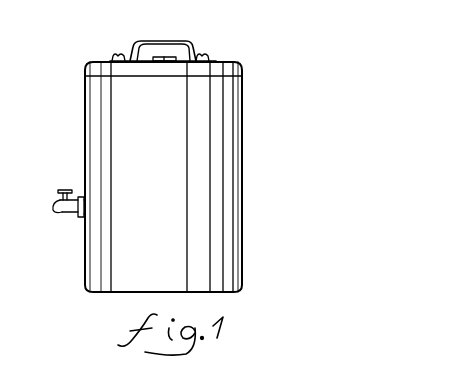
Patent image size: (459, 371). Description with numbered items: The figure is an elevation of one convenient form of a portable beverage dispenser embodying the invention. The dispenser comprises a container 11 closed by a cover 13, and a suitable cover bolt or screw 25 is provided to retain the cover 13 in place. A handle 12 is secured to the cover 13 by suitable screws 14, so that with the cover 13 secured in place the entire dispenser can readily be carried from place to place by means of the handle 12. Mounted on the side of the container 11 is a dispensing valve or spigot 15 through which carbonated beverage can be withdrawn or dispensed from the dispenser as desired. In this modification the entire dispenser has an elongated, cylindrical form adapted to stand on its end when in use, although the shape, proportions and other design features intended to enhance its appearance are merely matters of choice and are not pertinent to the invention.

The container 11 is at (233, 127).
The handle 12 is at (191, 43).
The cover 13 is at (227, 73).
The screws 14 is at (210, 58).
The dispensing valve or spigot 15 is at (58, 190).
The cover bolt or screw 25 is at (177, 59).